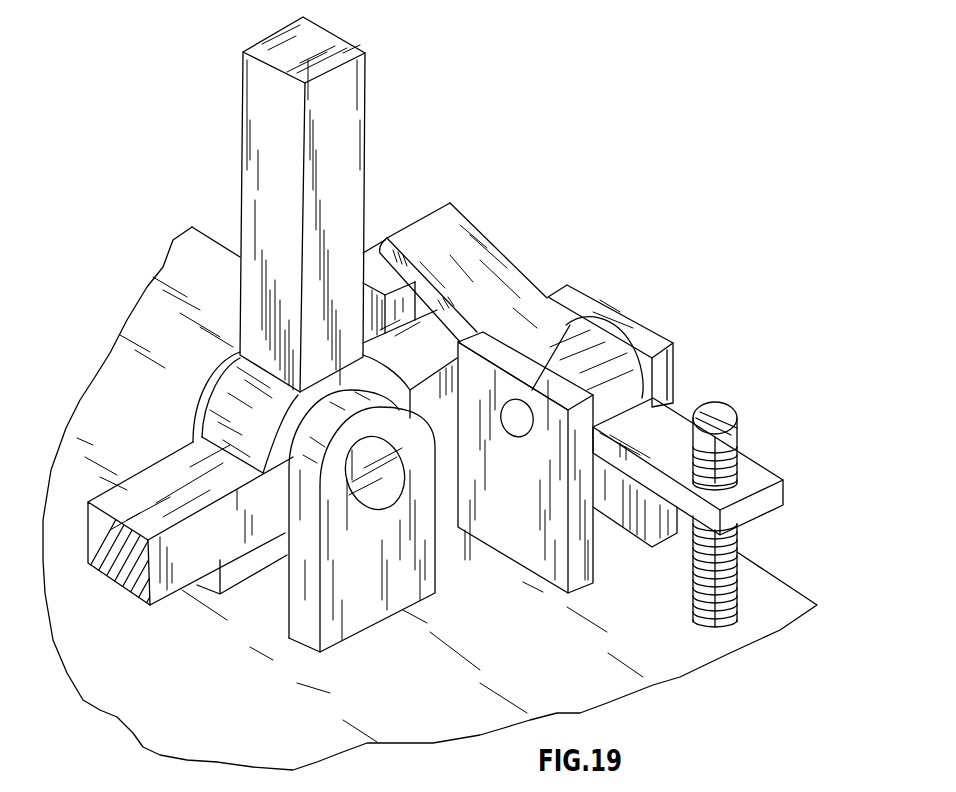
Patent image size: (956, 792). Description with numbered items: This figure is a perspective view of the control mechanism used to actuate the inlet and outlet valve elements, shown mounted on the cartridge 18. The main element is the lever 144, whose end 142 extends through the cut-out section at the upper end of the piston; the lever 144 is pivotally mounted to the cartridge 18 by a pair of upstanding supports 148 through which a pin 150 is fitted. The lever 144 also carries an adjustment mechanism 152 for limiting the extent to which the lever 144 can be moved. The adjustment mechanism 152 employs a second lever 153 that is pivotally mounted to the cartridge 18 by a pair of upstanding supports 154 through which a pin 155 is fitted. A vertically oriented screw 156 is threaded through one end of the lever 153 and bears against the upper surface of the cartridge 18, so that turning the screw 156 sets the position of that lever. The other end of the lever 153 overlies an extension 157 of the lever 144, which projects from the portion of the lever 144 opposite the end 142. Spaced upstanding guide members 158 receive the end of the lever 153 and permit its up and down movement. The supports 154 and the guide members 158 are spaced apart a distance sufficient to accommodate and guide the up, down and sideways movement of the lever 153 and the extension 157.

The cartridge 18 is at (780, 600).
The end of lever 142 is at (157, 476).
The lever 144 is at (245, 178).
The upstanding supports 148 is at (203, 386).
The pin 150 is at (372, 497).
The adjustment mechanism 152 is at (610, 228).
The lever 153 is at (452, 218).
The upstanding supports 154 is at (657, 343).
The pin 155 is at (518, 427).
The screw 156 is at (730, 413).
The extension 157 is at (407, 357).
The guide members 158 is at (386, 280).